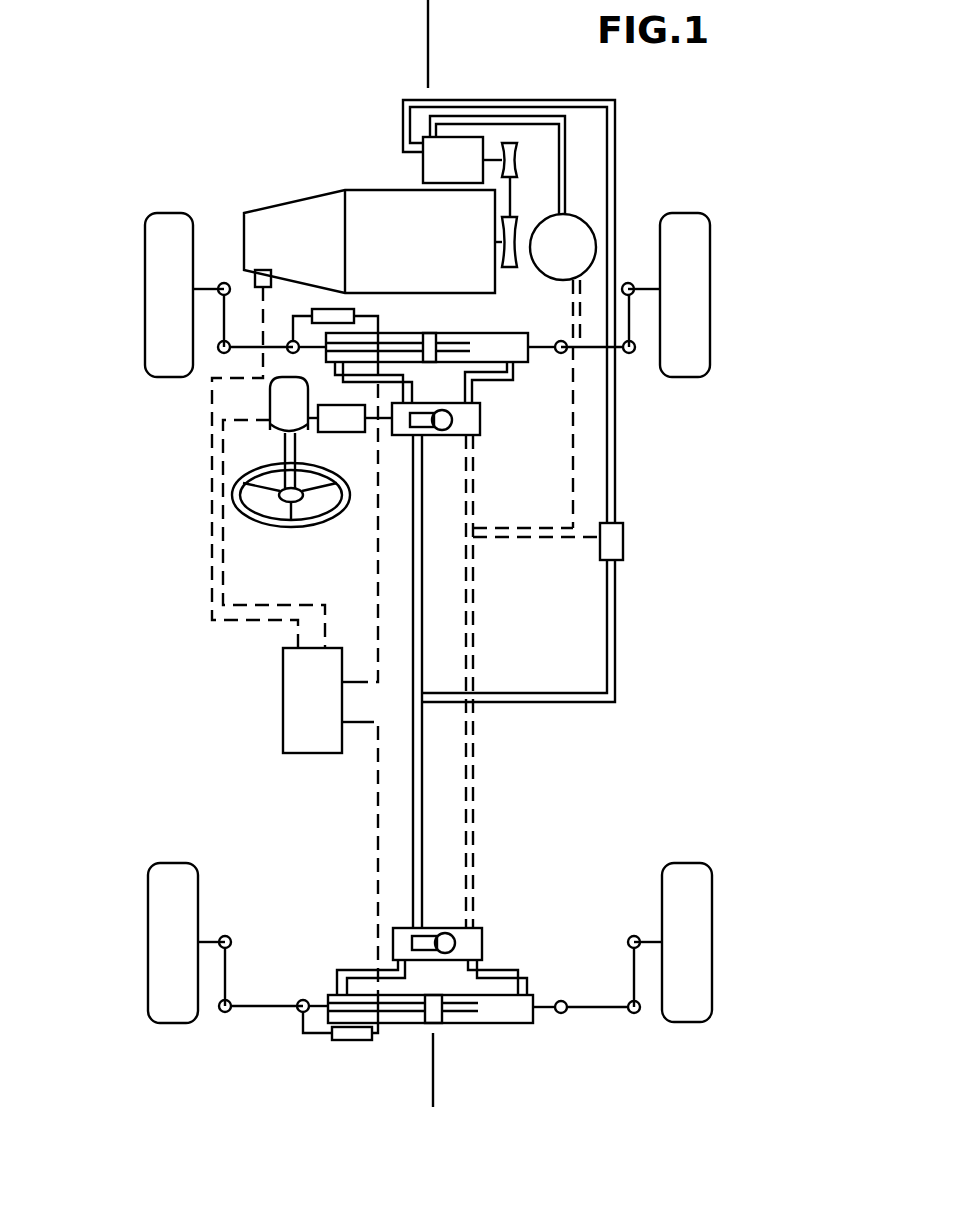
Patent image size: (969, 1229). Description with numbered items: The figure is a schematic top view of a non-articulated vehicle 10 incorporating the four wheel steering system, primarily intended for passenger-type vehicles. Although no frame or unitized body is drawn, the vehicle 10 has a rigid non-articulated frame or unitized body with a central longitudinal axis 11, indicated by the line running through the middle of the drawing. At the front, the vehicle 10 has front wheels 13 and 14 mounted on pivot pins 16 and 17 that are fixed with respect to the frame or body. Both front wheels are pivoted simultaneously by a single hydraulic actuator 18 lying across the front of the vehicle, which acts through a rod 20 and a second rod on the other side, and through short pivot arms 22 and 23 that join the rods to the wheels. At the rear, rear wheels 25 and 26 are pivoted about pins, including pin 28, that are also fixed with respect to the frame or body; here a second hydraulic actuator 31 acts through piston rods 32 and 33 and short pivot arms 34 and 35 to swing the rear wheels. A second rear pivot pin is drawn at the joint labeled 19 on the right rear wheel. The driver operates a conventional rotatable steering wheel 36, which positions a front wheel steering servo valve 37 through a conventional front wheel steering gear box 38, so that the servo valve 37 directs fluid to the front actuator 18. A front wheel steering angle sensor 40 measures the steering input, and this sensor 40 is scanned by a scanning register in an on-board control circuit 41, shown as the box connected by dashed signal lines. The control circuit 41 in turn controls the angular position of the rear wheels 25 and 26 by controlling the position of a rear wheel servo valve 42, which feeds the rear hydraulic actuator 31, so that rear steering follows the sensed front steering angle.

The vehicle 10 is at (127, 571).
The central longitudinal axis 11 is at (428, 41).
The front wheel 13 is at (155, 304).
The front wheel 14 is at (697, 314).
The pivot pin 16 is at (227, 282).
The pivot pin 17 is at (627, 283).
The hydraulic actuator 18 is at (455, 333).
The rear right steering arm joint 19 is at (632, 937).
The rod 20 is at (274, 342).
The short pivot arm 22 is at (224, 322).
The short pivot arm 23 is at (636, 327).
The rear wheel 25 is at (158, 942).
The rear wheel 26 is at (705, 966).
The pin 28 is at (228, 937).
The hydraulic actuator 31 is at (495, 1023).
The piston rod 32 is at (275, 1012).
The piston rod 33 is at (595, 1012).
The short pivot arm 34 is at (230, 975).
The short pivot arm 35 is at (630, 972).
The steering wheel 36 is at (293, 525).
The front wheel steering servo valve 37 is at (480, 425).
The front wheel steering gear box 38 is at (327, 433).
The front wheel steering angle sensor 40 is at (268, 403).
The on-board control circuit 41 is at (283, 705).
The rear wheel servo valve 42 is at (482, 940).